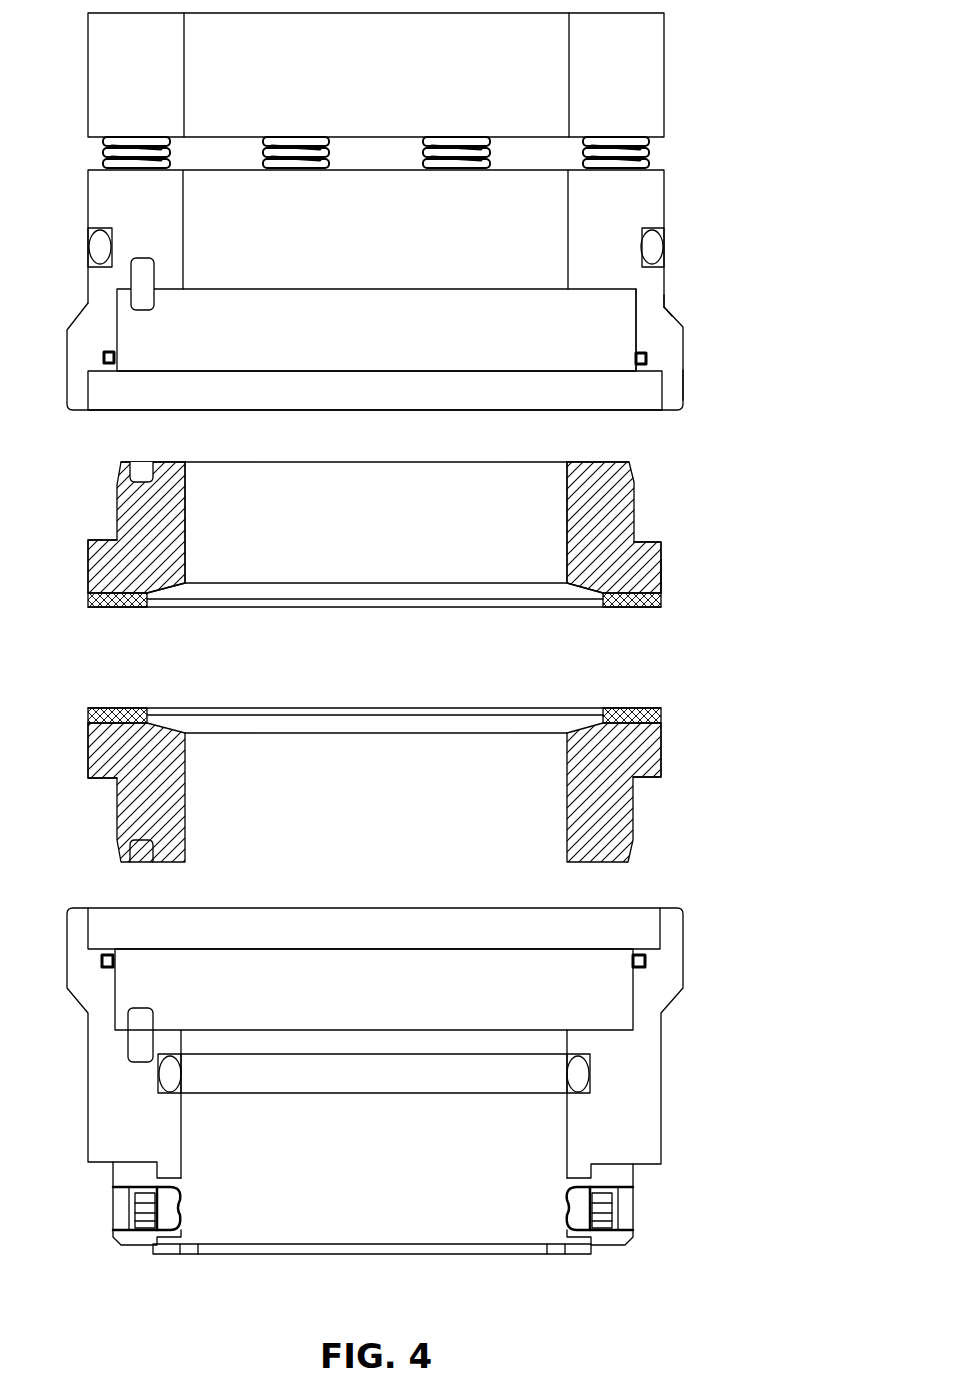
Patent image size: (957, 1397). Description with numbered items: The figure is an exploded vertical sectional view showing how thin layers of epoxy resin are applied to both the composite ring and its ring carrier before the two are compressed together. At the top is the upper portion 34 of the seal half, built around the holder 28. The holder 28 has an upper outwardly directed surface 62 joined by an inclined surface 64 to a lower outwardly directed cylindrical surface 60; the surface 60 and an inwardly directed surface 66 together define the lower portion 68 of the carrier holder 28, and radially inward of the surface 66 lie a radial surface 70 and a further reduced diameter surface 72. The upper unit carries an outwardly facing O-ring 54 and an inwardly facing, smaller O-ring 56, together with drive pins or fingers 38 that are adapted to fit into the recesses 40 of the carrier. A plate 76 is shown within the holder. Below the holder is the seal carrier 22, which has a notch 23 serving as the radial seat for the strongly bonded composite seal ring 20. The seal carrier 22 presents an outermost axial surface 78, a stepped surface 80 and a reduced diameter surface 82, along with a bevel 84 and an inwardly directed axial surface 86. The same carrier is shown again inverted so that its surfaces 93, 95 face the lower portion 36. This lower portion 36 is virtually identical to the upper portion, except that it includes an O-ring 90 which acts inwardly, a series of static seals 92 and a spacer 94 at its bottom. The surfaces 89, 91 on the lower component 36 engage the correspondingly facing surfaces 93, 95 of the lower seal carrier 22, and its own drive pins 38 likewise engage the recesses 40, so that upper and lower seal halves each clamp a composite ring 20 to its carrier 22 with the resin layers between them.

The composite seal ring 20 is at (665, 600).
The seal carrier 22 is at (648, 570).
The notch 23 is at (630, 601).
The holder 28 is at (573, 210).
The upper portion 34 is at (418, 609).
The lower portion 36 is at (375, 1108).
The drive pins 38 is at (144, 303).
The recesses 40 is at (140, 478).
The O-ring seal 54 is at (653, 243).
The smaller O-ring 56 is at (633, 357).
The lower outwardly directed cylindrical surface 60 is at (688, 352).
The upper outwardly directed surface 62 is at (665, 192).
The inclined surface 64 is at (675, 313).
The inwardly directed surface 66 is at (657, 402).
The lower portion of the carrier holder 68 is at (678, 394).
The radial surface 70 is at (645, 373).
The reduced diameter surface 72 is at (632, 316).
The plate 76 is at (394, 347).
The outermost axial surface 78 is at (663, 586).
The stepped surface 80 is at (404, 665).
The reduced diameter surface 82 is at (636, 478).
The bevel 84 is at (582, 600).
The inwardly directed axial surface 86 is at (567, 498).
The surface 89 is at (630, 985).
The O-ring 90 is at (570, 1066).
The surface 91 is at (656, 914).
The static seals 92 is at (578, 1196).
The surface 93 is at (663, 746).
The spacer 94 is at (577, 1258).
The surface 95 is at (635, 822).